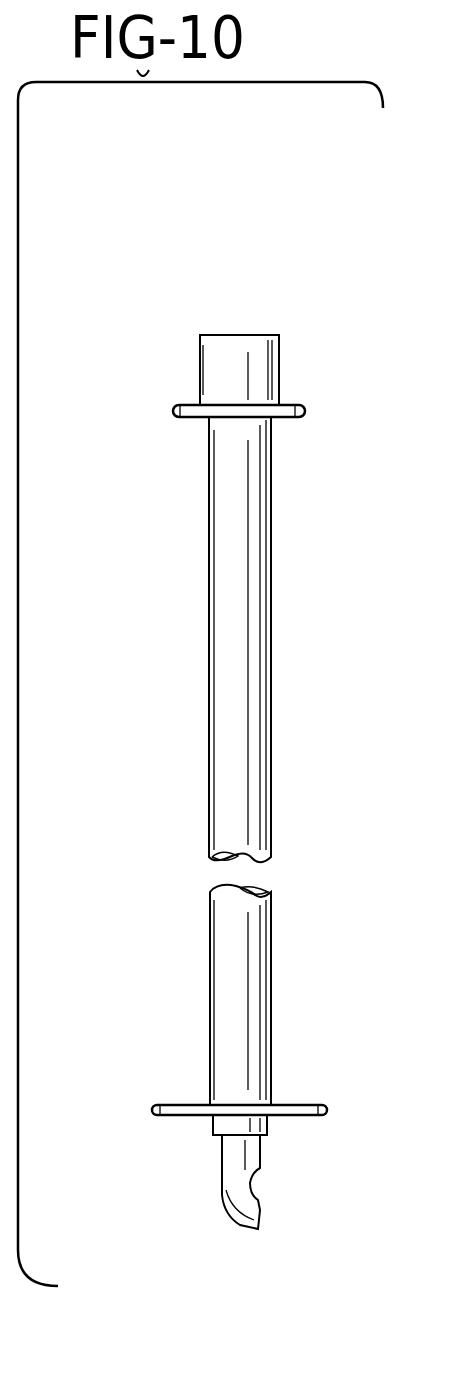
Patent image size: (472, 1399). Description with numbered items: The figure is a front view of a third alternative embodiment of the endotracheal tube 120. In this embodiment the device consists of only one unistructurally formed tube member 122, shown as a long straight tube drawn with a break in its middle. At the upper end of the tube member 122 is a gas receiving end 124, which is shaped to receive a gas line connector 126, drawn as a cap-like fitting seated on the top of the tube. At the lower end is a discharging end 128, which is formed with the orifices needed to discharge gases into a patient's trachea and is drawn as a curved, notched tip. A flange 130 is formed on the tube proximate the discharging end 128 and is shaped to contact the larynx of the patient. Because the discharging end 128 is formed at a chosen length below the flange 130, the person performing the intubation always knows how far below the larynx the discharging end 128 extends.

The endotracheal tube 120 is at (128, 232).
The tube member 122 is at (225, 722).
The gas receiving end 124 is at (188, 405).
The gas line connector 126 is at (272, 338).
The discharging end 128 is at (252, 1228).
The flange 130 is at (290, 1105).